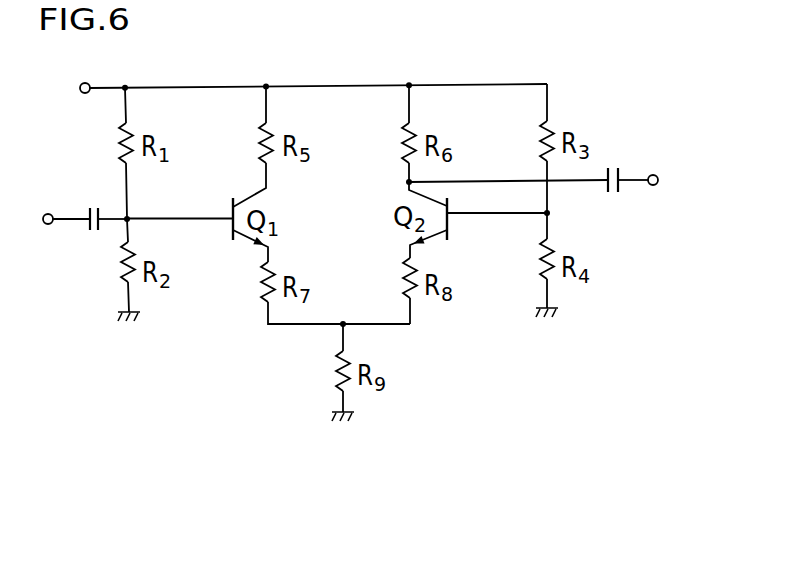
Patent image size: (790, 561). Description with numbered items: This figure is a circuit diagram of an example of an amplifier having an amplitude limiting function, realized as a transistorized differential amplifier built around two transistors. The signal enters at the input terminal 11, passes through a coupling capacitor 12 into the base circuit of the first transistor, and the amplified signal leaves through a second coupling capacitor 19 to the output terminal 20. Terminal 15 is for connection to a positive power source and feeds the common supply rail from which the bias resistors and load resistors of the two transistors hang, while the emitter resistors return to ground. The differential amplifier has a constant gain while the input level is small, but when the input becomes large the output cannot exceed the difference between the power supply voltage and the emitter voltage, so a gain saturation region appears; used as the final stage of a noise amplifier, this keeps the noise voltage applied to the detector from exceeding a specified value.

The input terminal 11 is at (48, 226).
The coupling capacitor C1 12 is at (93, 232).
The terminal for connection to a positive power source terminal 15 is at (83, 94).
The coupling capacitor C2 19 is at (613, 166).
The output terminal 20 is at (658, 176).